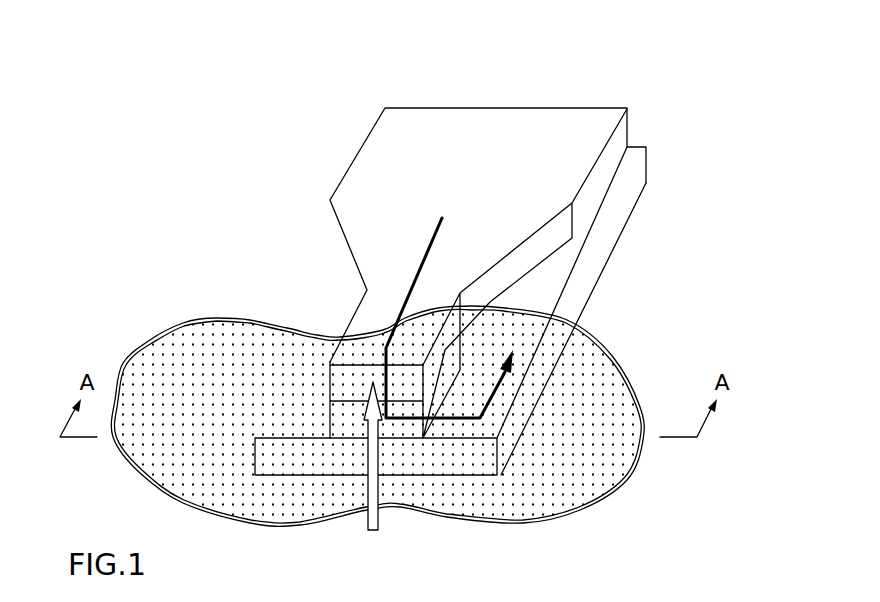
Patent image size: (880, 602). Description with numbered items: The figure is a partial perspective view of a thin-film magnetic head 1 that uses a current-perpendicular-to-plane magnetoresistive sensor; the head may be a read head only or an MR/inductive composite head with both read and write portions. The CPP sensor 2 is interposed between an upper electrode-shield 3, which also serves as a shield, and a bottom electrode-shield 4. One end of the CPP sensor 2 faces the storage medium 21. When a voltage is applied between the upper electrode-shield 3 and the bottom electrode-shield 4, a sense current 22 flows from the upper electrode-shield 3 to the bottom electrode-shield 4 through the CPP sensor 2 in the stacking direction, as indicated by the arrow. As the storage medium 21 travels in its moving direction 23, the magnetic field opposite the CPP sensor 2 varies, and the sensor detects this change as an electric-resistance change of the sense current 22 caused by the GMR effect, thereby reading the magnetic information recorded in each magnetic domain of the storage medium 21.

The thin-film magnetic head 1 is at (546, 98).
The CPP sensor 2 is at (340, 415).
The upper electrode-shield 3 is at (613, 142).
The bottom electrode-shield 4 is at (602, 260).
The storage medium 21 is at (617, 362).
The sense current 22 is at (418, 267).
The moving direction 23 is at (383, 485).